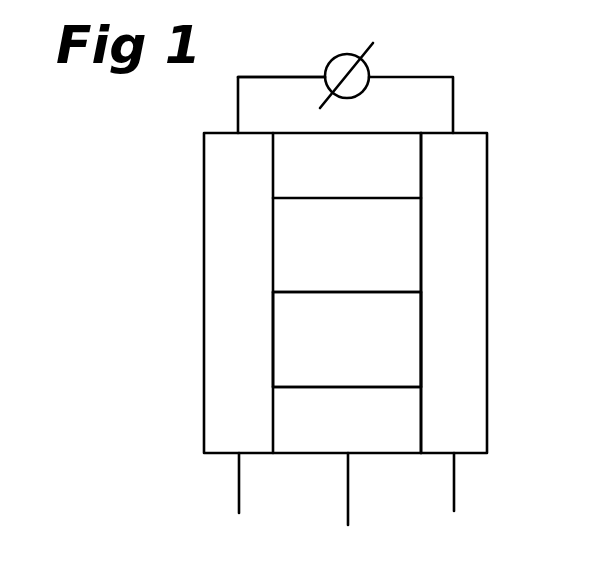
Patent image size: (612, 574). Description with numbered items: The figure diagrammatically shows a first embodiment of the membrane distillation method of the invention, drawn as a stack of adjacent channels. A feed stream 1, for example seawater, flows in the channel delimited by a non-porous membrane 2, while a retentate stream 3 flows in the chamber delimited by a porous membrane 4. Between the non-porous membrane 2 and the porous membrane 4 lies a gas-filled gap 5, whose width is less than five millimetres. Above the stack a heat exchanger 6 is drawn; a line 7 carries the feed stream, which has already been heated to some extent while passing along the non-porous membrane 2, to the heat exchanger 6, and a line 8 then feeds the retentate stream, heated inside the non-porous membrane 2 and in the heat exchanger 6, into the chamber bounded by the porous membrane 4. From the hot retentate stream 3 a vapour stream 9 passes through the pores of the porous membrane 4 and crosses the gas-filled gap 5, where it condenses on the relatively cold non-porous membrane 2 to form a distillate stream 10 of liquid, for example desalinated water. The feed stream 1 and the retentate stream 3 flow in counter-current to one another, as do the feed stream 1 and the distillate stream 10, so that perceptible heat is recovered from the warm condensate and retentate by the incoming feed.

The feed stream 1 is at (239, 495).
The non-porous membrane 2 is at (273, 270).
The retentate stream 3 is at (455, 495).
The porous membrane 4 is at (423, 220).
The gas-filled gap 5 is at (355, 338).
The heat exchanger 6 is at (362, 71).
The line for feeding the feed stream 7 is at (283, 75).
The line 8 is at (453, 88).
The vapour stream 9 is at (366, 198).
The distillate stream 10 is at (348, 502).